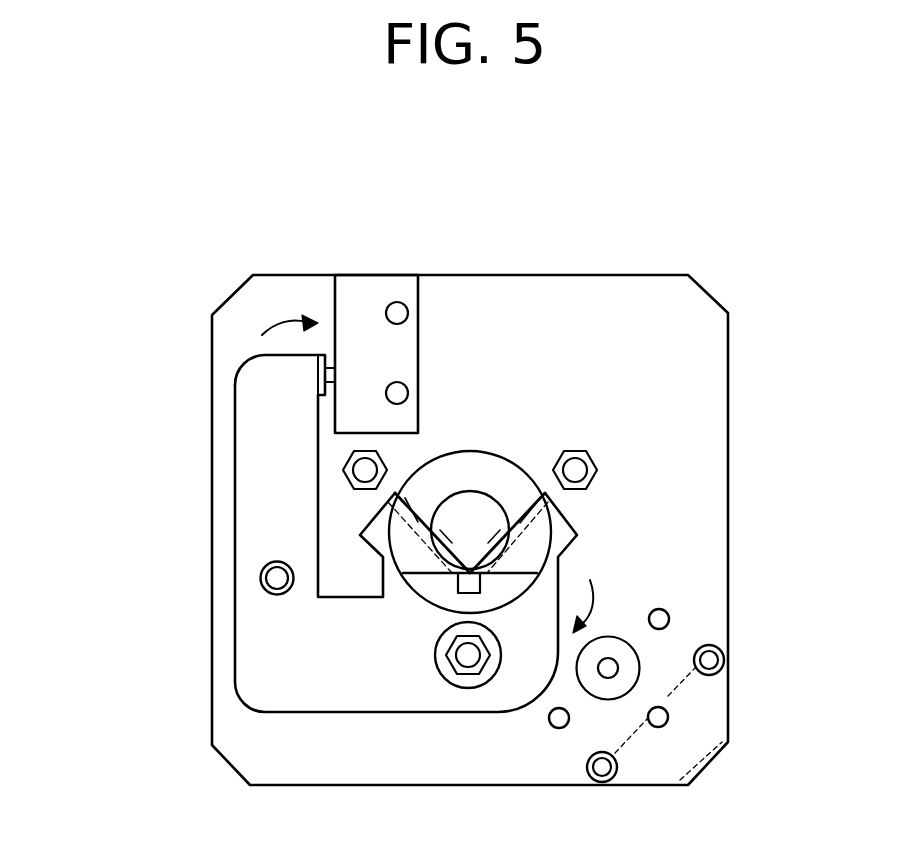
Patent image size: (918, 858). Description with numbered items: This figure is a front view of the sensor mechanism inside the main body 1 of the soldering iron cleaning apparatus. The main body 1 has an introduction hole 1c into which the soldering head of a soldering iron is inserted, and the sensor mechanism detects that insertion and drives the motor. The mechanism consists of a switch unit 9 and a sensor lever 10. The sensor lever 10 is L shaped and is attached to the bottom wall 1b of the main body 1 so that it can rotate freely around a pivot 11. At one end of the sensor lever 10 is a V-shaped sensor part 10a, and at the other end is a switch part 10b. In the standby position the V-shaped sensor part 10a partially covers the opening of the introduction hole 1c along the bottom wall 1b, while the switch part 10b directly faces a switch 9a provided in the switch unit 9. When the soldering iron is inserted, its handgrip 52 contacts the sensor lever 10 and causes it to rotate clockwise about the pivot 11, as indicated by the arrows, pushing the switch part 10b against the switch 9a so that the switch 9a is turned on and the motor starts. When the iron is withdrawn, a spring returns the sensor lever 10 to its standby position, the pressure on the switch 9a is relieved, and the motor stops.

The main body 1 is at (728, 457).
The bottom wall 1b is at (693, 545).
The introduction hole 1c is at (517, 487).
The switch unit 9 is at (380, 297).
The switch 9a is at (338, 372).
The sensor lever 10 is at (237, 498).
The V-shaped sensor part 10a is at (422, 520).
The switch part 10b is at (318, 377).
The pivot 11 is at (262, 578).
The handgrip 52 is at (477, 493).